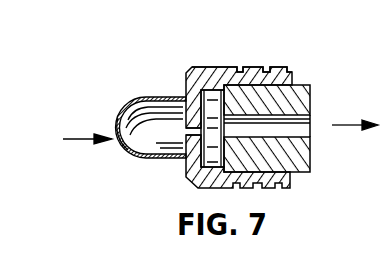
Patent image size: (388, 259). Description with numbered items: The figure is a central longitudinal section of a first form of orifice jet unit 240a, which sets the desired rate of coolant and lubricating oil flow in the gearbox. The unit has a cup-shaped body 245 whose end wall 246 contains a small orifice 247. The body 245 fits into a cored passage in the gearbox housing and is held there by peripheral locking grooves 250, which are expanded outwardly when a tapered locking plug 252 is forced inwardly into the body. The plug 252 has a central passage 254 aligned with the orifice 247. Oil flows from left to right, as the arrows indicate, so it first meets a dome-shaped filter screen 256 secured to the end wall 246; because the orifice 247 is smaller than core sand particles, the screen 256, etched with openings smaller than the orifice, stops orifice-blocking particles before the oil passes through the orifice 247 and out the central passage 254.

The orifice jet unit 240a is at (178, 191).
The cup-shaped body 245 is at (214, 76).
The end wall 246 is at (185, 93).
The orifice 247 is at (196, 128).
The peripheral locking grooves 250 is at (278, 68).
The tapered locking plug 252 is at (303, 100).
The central passage 254 is at (303, 157).
The screen 256 is at (113, 148).